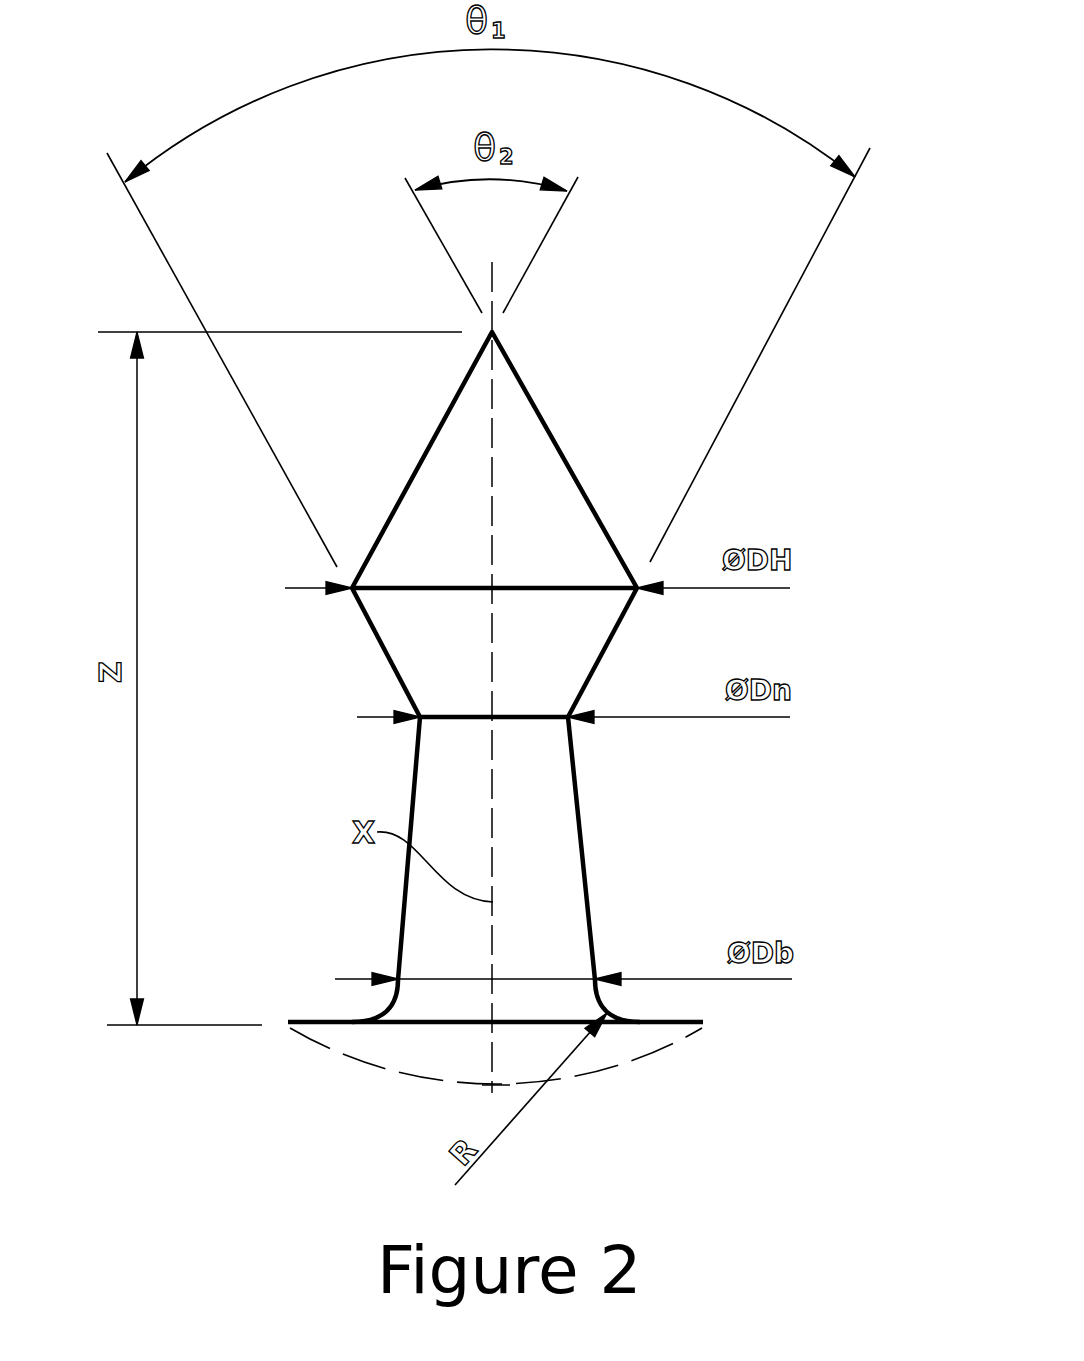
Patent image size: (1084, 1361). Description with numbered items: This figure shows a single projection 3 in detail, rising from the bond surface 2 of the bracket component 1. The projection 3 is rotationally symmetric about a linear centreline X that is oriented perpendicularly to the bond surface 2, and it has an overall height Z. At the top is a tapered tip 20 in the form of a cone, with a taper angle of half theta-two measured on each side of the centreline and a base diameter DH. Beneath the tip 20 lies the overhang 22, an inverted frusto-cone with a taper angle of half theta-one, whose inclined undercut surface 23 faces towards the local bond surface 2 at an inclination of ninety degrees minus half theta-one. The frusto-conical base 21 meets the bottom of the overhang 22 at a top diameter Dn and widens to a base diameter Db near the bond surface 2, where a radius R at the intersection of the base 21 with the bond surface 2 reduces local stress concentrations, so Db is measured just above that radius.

The bracket component 1 is at (618, 1052).
The bond surface 2 is at (673, 1020).
The projection 3 is at (585, 729).
The tapered tip 20 is at (550, 466).
The base 21 is at (568, 847).
The overhang 22 is at (395, 652).
The undercut surface 23 is at (590, 648).